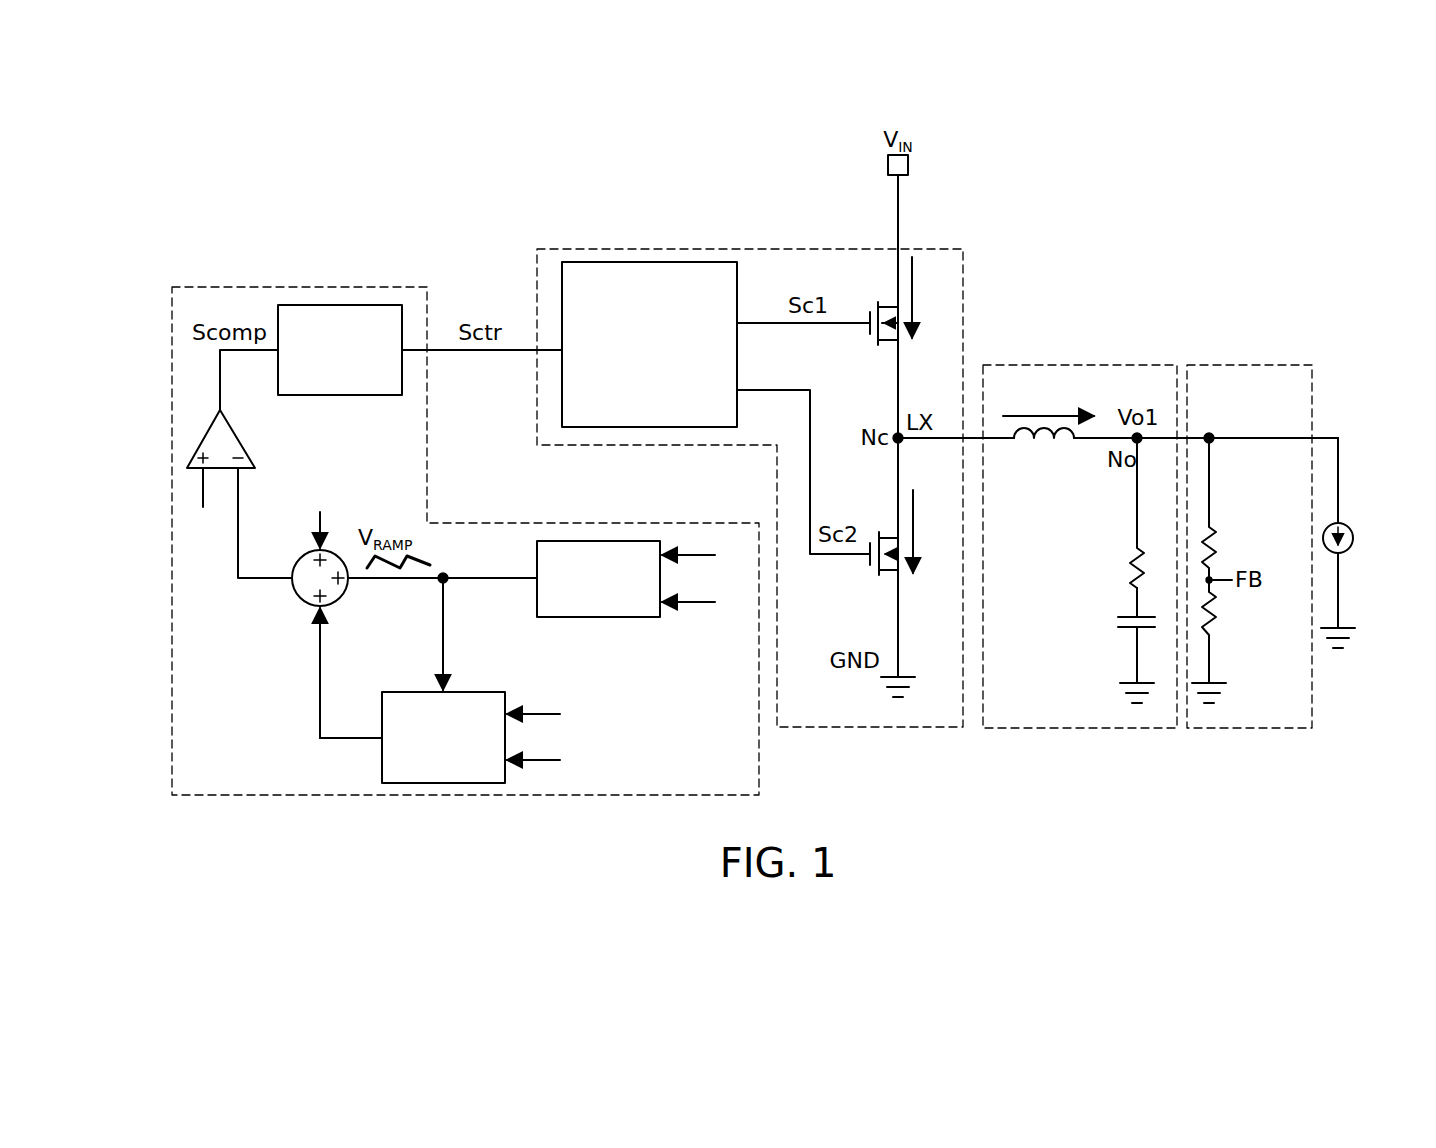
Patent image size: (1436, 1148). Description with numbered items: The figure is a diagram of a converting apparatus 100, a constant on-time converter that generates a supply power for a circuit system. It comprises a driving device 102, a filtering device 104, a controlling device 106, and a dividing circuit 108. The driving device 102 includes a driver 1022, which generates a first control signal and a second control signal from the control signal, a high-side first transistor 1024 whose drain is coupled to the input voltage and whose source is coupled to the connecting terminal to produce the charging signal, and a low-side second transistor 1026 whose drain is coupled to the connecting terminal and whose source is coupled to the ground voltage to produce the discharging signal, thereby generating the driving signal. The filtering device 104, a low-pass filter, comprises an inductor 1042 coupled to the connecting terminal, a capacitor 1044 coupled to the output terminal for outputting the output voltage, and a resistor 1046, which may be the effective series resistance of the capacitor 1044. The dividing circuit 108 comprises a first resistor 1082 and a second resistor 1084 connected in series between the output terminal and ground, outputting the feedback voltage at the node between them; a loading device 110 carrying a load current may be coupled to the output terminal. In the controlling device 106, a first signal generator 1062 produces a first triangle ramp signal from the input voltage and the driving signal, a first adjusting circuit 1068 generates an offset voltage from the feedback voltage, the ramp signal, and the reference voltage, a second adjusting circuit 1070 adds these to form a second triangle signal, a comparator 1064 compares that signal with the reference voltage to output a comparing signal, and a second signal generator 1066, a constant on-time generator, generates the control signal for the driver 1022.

The converting apparatus 100 is at (230, 142).
The driving device 102 is at (727, 249).
The driver 1022 is at (645, 262).
The first transistor 1024 is at (890, 350).
The second transistor 1026 is at (890, 580).
The filtering device 104 is at (1088, 365).
The inductor 1042 is at (1042, 446).
The capacitor 1044 is at (1127, 634).
The resistor 1046 is at (1129, 565).
The controlling device 106 is at (372, 287).
The first signal generator 1062 is at (637, 617).
The comparator 1064 is at (248, 430).
The second signal generator 1066 is at (305, 305).
The first adjusting circuit 1068 is at (443, 783).
The second adjusting circuit 1070 is at (295, 598).
The dividing circuit 108 is at (1255, 365).
The first resistor 1082 is at (1221, 543).
The second resistor 1084 is at (1218, 632).
The loading device 110 is at (1348, 553).